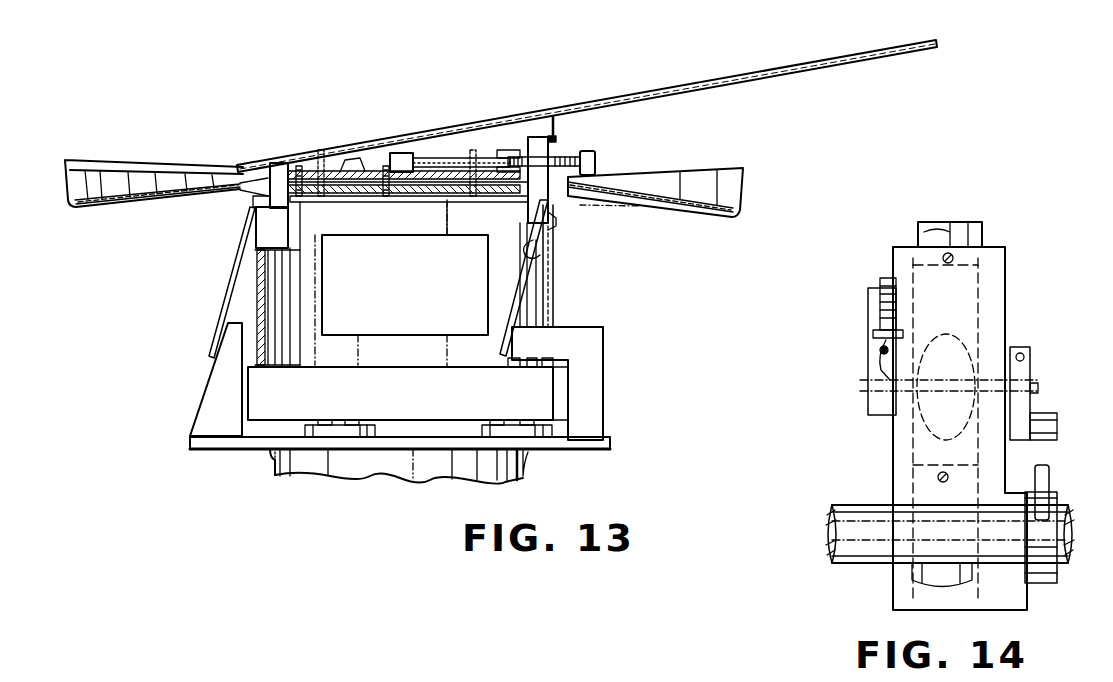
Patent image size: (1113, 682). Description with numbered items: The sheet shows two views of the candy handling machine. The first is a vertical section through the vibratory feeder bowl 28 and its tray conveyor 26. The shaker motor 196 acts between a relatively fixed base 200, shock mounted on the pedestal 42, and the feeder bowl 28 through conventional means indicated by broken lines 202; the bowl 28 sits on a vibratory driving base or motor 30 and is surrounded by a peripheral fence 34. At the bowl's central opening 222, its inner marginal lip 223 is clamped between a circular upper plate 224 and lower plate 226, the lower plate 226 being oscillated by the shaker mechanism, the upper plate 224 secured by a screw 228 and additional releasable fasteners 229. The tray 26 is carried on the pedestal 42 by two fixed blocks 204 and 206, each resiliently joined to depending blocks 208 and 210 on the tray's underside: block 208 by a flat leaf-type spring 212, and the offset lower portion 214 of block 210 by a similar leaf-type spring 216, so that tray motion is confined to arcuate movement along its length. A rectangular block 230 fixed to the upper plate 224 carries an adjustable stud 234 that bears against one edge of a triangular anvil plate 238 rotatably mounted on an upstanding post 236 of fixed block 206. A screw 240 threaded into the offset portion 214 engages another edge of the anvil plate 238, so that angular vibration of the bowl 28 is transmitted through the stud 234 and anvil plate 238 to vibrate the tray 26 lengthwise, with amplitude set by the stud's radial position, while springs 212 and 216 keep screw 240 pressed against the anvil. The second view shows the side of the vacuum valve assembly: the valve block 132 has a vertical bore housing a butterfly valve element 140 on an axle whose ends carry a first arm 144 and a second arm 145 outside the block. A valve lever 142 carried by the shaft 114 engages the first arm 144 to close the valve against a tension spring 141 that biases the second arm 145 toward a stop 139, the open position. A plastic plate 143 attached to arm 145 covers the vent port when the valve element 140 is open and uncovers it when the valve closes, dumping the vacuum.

In FIG. 13, the tray conveyor 26 is at (690, 86).
In FIG. 13, the peripheral fence 34 is at (106, 178).
In FIG. 13, the feeder bowl 28 is at (655, 195).
In FIG. 13, the depending block 208 is at (268, 172).
In FIG. 13, the inner marginal lip 223 is at (258, 202).
In FIG. 13, the upper plate 224 is at (300, 190).
In FIG. 13, the lower plate 226 is at (383, 192).
In FIG. 13, the releasable fasteners 229 is at (318, 170).
In FIG. 13, the screw 228 is at (362, 160).
In FIG. 13, the block 230 is at (400, 163).
In FIG. 13, the stud 234 is at (458, 158).
In FIG. 13, the anvil plate 238 is at (507, 152).
In FIG. 13, the post 236 is at (555, 118).
In FIG. 13, the depending block 210 is at (552, 142).
In FIG. 13, the screw 240 is at (597, 163).
In FIG. 13, the central opening 222 is at (556, 218).
In FIG. 13, the broken lines 202 is at (447, 218).
In FIG. 13, the leaf-type spring 212 is at (238, 268).
In FIG. 13, the fixed block 204 is at (212, 375).
In FIG. 13, the vibratory driving base or motor 30 is at (554, 282).
In FIG. 13, the leaf-type spring 216 is at (528, 308).
In FIG. 13, the offset lower portion 214 is at (550, 259).
In FIG. 13, the shaker motor 196 is at (405, 285).
In FIG. 13, the fixed base 200 is at (400, 389).
In FIG. 13, the fixed block 206 is at (604, 396).
In FIG. 13, the pedestal 42 is at (272, 464).
In FIG. 14, the valve block 132 is at (1007, 270).
In FIG. 14, the valve element 140 is at (975, 335).
In FIG. 14, the stop 139 is at (854, 351).
In FIG. 14, the plate 143 is at (890, 284).
In FIG. 14, the second arm 145 is at (871, 340).
In FIG. 14, the tension spring 141 is at (876, 378).
In FIG. 14, the first arm 144 is at (1031, 368).
In FIG. 14, the shaft 114 is at (855, 505).
In FIG. 14, the valve lever 142 is at (1051, 475).